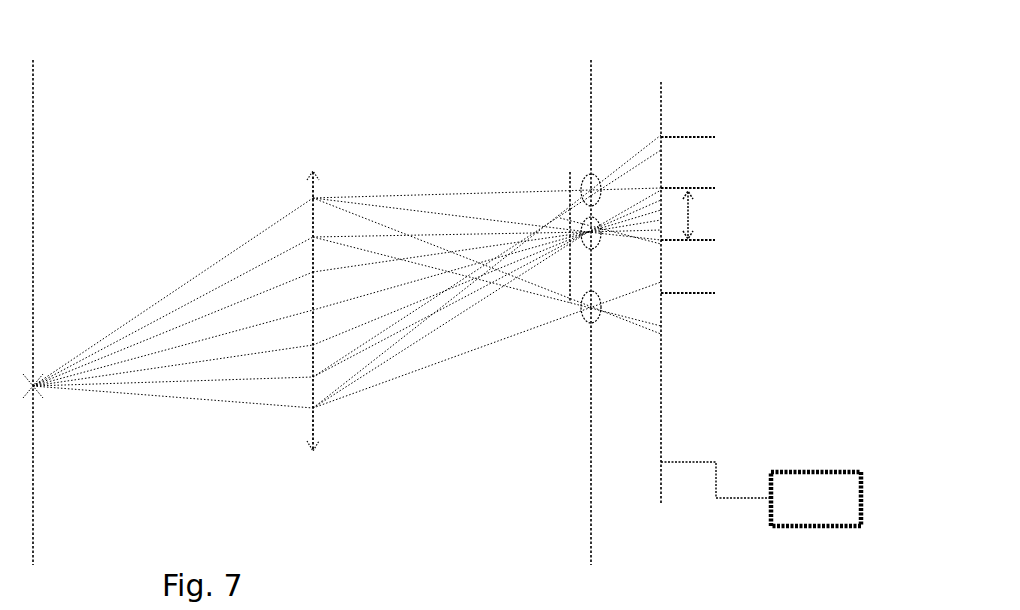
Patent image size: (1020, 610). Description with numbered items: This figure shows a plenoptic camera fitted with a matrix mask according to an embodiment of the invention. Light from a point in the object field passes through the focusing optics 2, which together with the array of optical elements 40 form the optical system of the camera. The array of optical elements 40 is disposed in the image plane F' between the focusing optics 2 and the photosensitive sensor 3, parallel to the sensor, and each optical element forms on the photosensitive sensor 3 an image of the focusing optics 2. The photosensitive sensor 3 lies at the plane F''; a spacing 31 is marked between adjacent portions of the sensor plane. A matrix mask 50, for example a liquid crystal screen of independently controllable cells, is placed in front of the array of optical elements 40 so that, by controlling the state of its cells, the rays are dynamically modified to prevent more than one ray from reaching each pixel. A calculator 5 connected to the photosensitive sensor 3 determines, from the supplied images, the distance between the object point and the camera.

The focusing optics 2 is at (315, 170).
The matrix mask 50 is at (569, 168).
The array of optical elements 40 is at (591, 147).
The photosensitive sensor 3 is at (662, 100).
The detector pixel region 31 is at (703, 215).
The calculator 5 is at (808, 470).